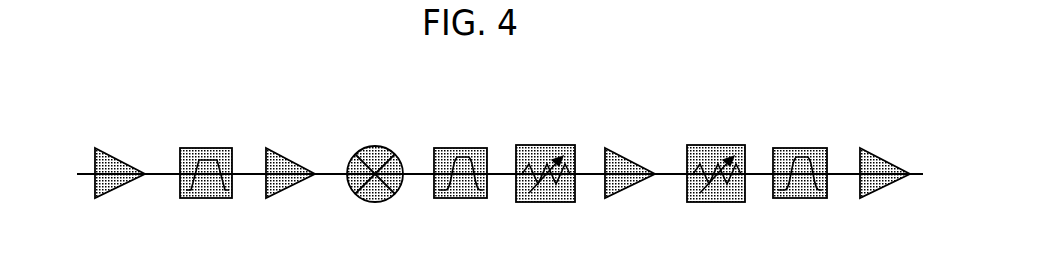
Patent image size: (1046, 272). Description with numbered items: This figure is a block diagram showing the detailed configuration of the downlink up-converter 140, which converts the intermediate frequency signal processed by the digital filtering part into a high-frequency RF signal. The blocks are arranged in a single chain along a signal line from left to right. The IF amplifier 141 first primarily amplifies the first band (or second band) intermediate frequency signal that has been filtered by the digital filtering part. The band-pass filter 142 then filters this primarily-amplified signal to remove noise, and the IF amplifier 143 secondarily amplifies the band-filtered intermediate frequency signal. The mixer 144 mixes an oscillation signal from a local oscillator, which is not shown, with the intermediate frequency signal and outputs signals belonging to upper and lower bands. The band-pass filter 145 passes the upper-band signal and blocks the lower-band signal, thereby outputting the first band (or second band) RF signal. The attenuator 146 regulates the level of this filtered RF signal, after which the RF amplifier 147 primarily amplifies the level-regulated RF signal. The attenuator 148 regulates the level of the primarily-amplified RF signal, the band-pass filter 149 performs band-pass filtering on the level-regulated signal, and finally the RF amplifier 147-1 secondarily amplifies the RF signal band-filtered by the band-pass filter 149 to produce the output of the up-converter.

The downlink up-converter 140 is at (482, 68).
The IF amplifier 141 is at (102, 203).
The band-pass filter 142 is at (188, 203).
The IF amplifier 143 is at (270, 203).
The mixer 144 is at (372, 208).
The band-pass filter 145 is at (451, 203).
The attenuator 146 is at (542, 205).
The RF amplifier 147 is at (617, 203).
The attenuator 148 is at (723, 205).
The band-pass filter 149 is at (806, 203).
The RF amplifier 147-1 is at (882, 195).